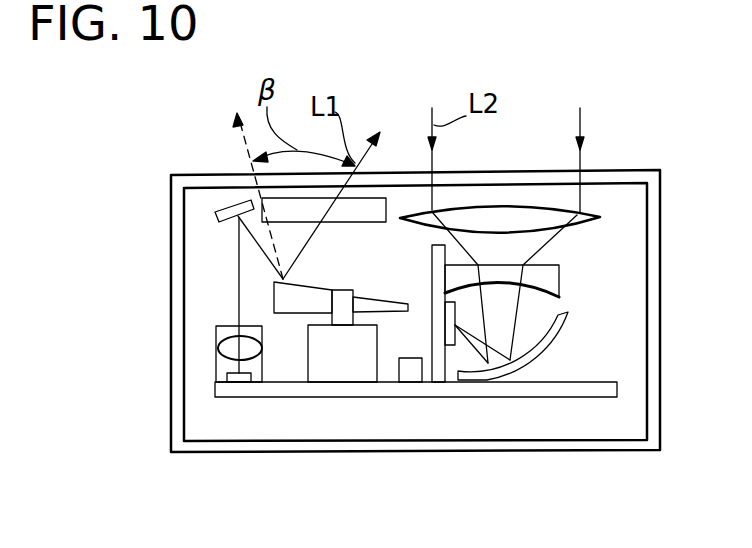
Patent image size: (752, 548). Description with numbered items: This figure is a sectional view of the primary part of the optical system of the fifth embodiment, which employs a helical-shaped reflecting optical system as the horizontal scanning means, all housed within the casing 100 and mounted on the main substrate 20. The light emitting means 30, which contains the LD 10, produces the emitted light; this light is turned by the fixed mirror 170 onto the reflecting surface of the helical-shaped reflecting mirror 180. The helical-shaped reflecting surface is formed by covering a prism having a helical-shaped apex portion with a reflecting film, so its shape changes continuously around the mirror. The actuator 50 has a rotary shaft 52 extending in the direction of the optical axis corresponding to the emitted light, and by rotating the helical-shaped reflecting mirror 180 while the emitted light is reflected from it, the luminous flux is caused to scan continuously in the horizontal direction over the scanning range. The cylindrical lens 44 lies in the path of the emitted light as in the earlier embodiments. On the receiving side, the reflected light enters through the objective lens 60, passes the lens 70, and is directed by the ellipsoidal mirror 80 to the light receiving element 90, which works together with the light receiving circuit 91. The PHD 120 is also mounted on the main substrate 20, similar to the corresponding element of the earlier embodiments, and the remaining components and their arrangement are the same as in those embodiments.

The LD 10 is at (216, 378).
The main substrate 20 is at (538, 397).
The light emitting means 30 is at (216, 338).
The cylindrical lens 44 is at (362, 198).
The actuator 50 is at (333, 372).
The rotary shaft 52 is at (341, 302).
The objective lens 60 is at (582, 208).
The lens 70 is at (560, 267).
The ellipsoidal mirror 80 is at (570, 318).
The light receiving element 90 is at (468, 380).
The light receiving circuit 91 is at (441, 380).
The casing 100 is at (588, 452).
The PHD 120 is at (408, 385).
The fixed mirror 170 is at (226, 210).
The helical-shaped reflecting mirror 180 is at (274, 292).